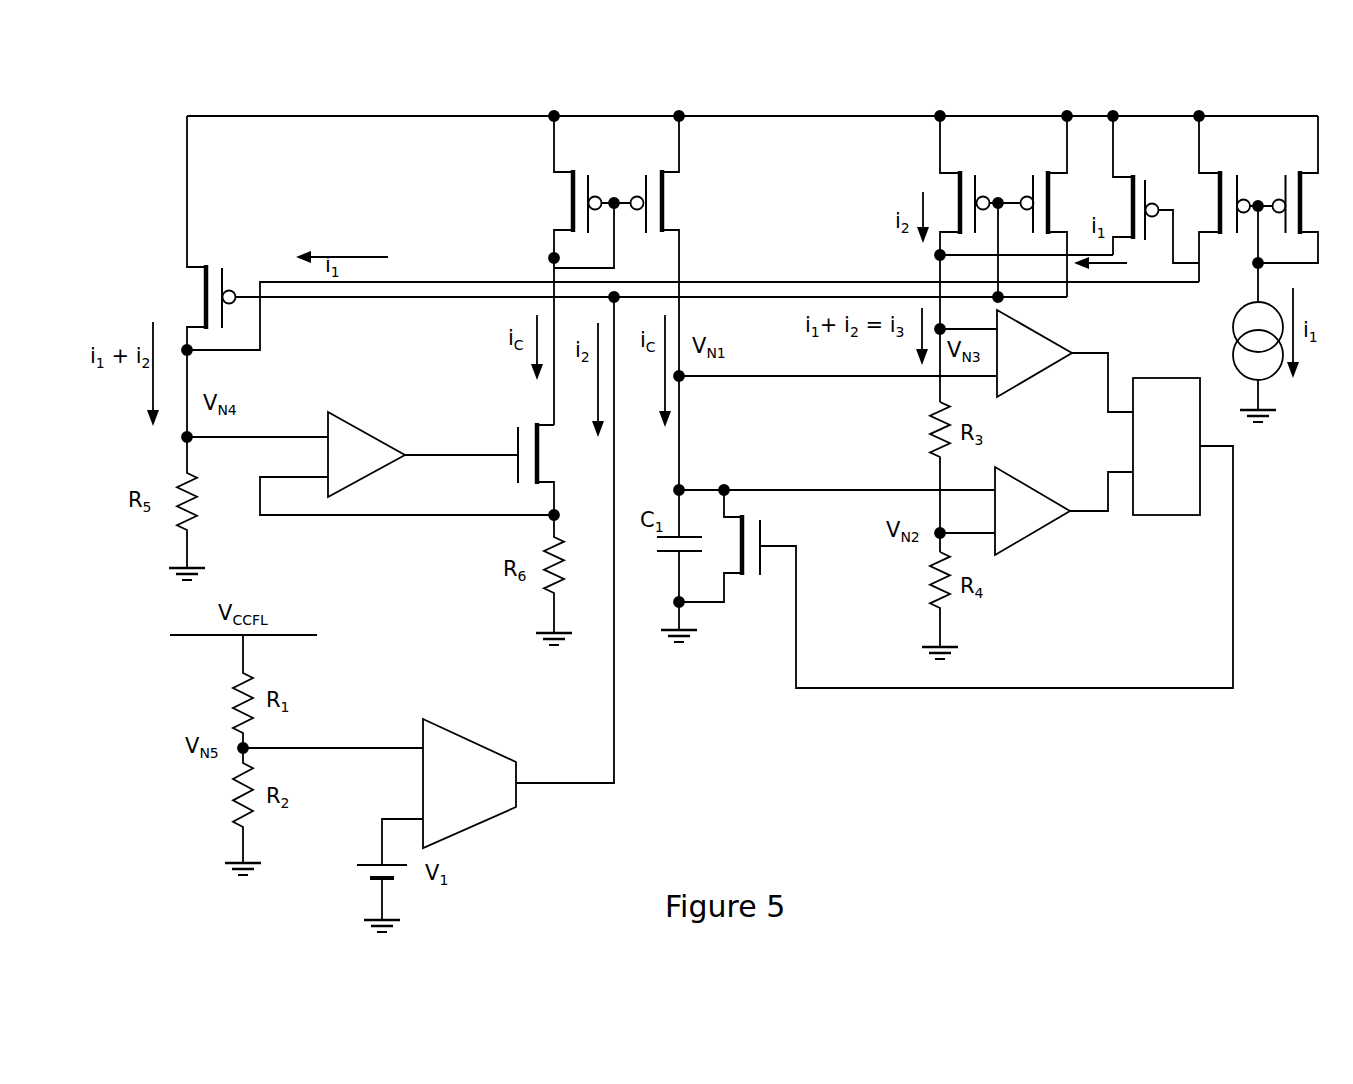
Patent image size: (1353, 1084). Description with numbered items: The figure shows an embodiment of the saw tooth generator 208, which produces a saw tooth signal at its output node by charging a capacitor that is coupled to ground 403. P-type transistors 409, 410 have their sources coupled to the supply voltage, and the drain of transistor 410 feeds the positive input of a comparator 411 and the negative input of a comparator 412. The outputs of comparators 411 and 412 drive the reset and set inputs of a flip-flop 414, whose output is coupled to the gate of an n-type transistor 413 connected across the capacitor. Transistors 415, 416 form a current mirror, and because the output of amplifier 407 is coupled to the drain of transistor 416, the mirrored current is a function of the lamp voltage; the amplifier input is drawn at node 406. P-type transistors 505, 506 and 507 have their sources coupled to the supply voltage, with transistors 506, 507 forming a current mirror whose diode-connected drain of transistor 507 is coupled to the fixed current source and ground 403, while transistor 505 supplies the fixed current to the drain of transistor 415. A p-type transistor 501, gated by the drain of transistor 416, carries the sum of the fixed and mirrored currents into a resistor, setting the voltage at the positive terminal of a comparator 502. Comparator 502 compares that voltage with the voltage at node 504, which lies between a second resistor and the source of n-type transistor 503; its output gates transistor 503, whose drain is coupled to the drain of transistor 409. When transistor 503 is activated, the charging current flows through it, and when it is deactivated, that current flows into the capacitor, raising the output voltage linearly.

The saw tooth generator 208 is at (198, 92).
The ground 403 is at (205, 568).
The node VN5 input wire 406 is at (280, 748).
The amplifier 407 is at (472, 738).
The p-type transistor 409 is at (572, 215).
The p-type transistor 410 is at (678, 202).
The comparator 411 is at (1050, 335).
The comparator 412 is at (1020, 480).
The n-type transistor 413 is at (743, 578).
The flip-flop 414 is at (1157, 505).
The transistor 415 is at (957, 195).
The transistor 416 is at (1047, 173).
The p-type transistor 501 is at (202, 308).
The comparator 502 is at (350, 428).
The n-type transistor 503 is at (537, 420).
The node 504 is at (558, 508).
The p-type transistor 505 is at (1125, 177).
The p-type transistor 506 is at (1212, 172).
The p-type transistor 507 is at (1300, 172).